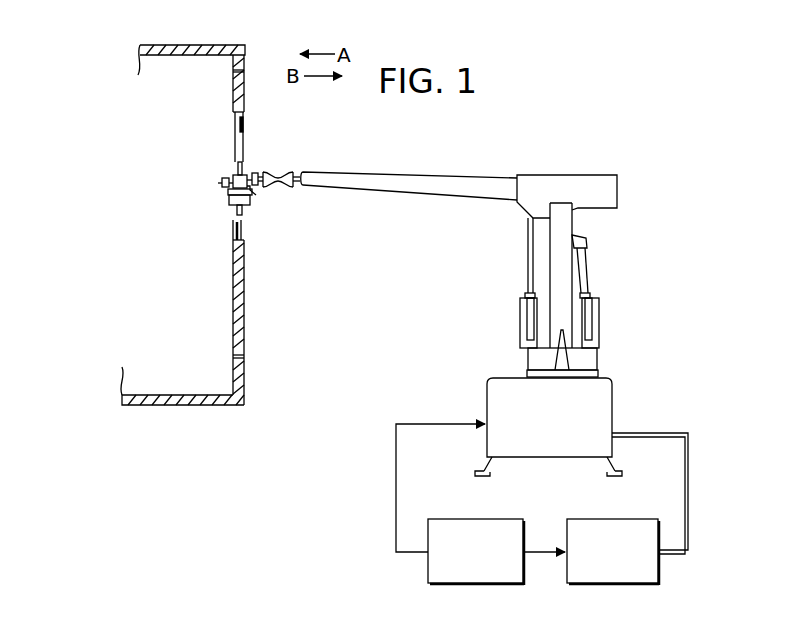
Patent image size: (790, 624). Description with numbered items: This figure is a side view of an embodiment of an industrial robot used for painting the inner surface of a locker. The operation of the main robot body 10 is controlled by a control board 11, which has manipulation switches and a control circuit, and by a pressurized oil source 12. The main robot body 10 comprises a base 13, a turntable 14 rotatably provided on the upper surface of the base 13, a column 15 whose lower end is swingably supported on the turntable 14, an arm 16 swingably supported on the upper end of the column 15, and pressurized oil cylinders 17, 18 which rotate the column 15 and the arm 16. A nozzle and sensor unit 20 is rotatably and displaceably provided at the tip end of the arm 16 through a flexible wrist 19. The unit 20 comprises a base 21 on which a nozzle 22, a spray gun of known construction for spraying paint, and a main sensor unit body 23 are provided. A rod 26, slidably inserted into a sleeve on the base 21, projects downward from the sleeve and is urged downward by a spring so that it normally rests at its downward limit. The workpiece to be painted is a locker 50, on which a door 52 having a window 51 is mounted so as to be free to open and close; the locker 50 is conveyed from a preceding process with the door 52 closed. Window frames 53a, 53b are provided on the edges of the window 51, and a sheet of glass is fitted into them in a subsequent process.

The main robot body 10 is at (553, 161).
The control board 11 is at (468, 518).
The pressurized oil source 12 is at (597, 518).
The base 13 is at (488, 393).
The turntable 14 is at (597, 360).
The column 15 is at (565, 224).
The arm 16 is at (455, 176).
The pressurized oil cylinder 17 is at (590, 320).
The pressurized oil cylinder 18 is at (527, 320).
The flexible wrist 19 is at (275, 170).
The nozzle and sensor unit 20 is at (232, 170).
The base 21 is at (257, 195).
The nozzle 22 is at (221, 183).
The main sensor unit body 23 is at (224, 197).
The rod 26 is at (236, 210).
The locker 50 is at (212, 45).
The window 51 is at (237, 138).
The door 52 is at (244, 302).
The window frame 53a is at (244, 230).
The window frame 53b is at (232, 240).